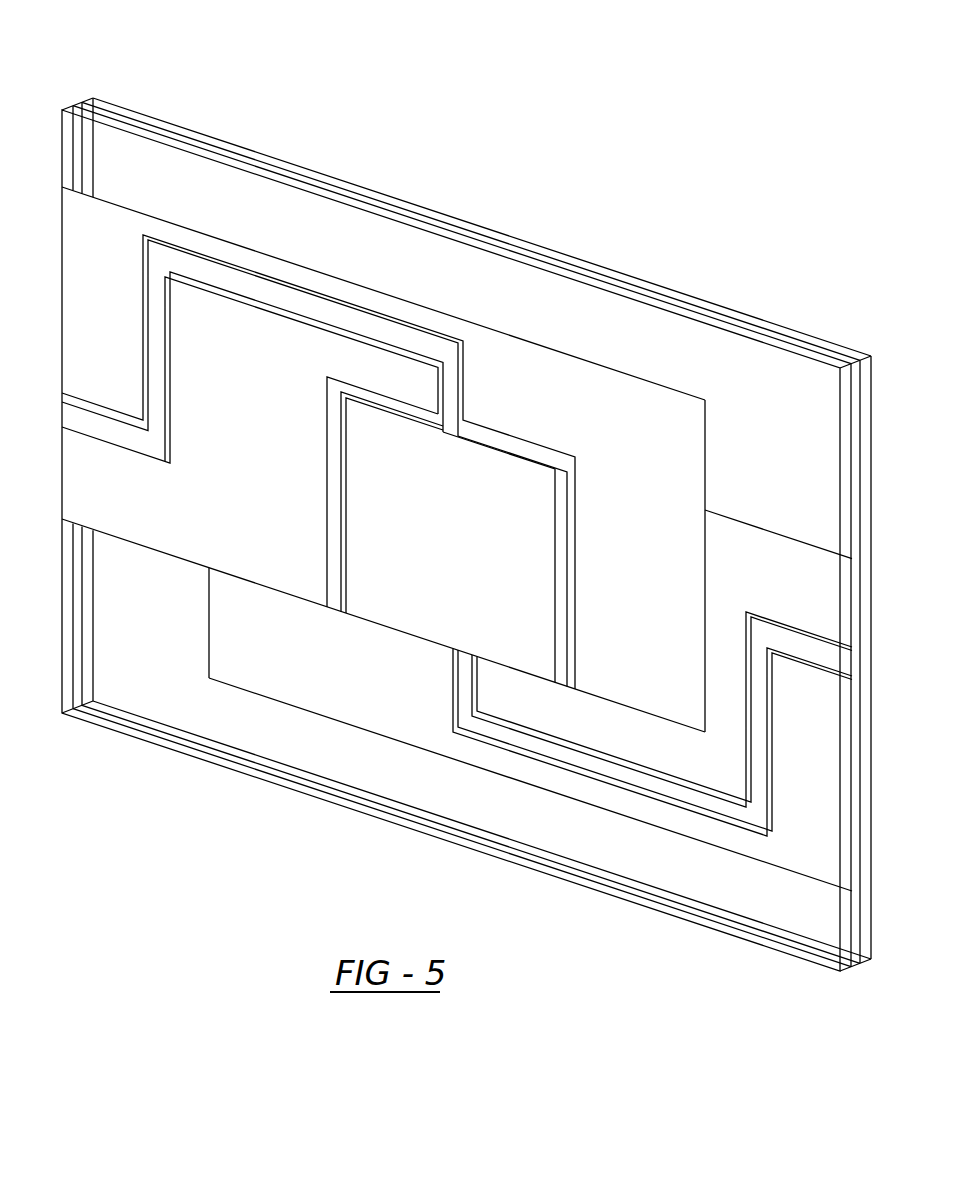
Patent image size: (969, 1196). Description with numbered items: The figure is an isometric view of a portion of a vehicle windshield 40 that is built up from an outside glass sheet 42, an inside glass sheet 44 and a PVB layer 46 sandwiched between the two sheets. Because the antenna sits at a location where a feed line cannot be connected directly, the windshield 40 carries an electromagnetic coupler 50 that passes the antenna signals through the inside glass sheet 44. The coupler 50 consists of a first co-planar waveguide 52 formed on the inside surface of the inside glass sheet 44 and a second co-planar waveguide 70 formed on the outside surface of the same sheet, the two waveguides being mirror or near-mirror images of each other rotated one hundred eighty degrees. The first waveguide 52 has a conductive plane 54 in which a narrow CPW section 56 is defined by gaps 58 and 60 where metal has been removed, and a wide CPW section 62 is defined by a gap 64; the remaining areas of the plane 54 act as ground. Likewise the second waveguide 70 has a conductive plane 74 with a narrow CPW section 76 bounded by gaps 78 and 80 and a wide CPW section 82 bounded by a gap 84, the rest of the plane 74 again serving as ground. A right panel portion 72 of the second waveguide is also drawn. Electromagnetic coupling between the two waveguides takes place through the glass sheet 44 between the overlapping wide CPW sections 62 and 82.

The vehicle windshield 40 is at (481, 100).
The outside glass sheet 42 is at (862, 378).
The inside glass sheet 44 is at (845, 470).
The PVB layer 46 is at (855, 915).
The electromagnetic coupler 50 is at (445, 256).
The first co-planar waveguide 52 is at (700, 870).
The conductive plane 54 is at (315, 690).
The narrow CPW section 56 is at (650, 775).
The gap 58 is at (612, 750).
The gap 60 is at (535, 760).
The wide CPW section 62 is at (570, 610).
The gap 64 is at (398, 640).
The second co-planar waveguide 70 is at (560, 327).
The right panel portion 72 is at (740, 356).
The conductive plane 74 is at (77, 457).
The narrow CPW section 76 is at (315, 308).
The gap 78 is at (250, 272).
The gap 80 is at (282, 316).
The wide CPW section 82 is at (495, 470).
The gap 84 is at (330, 610).